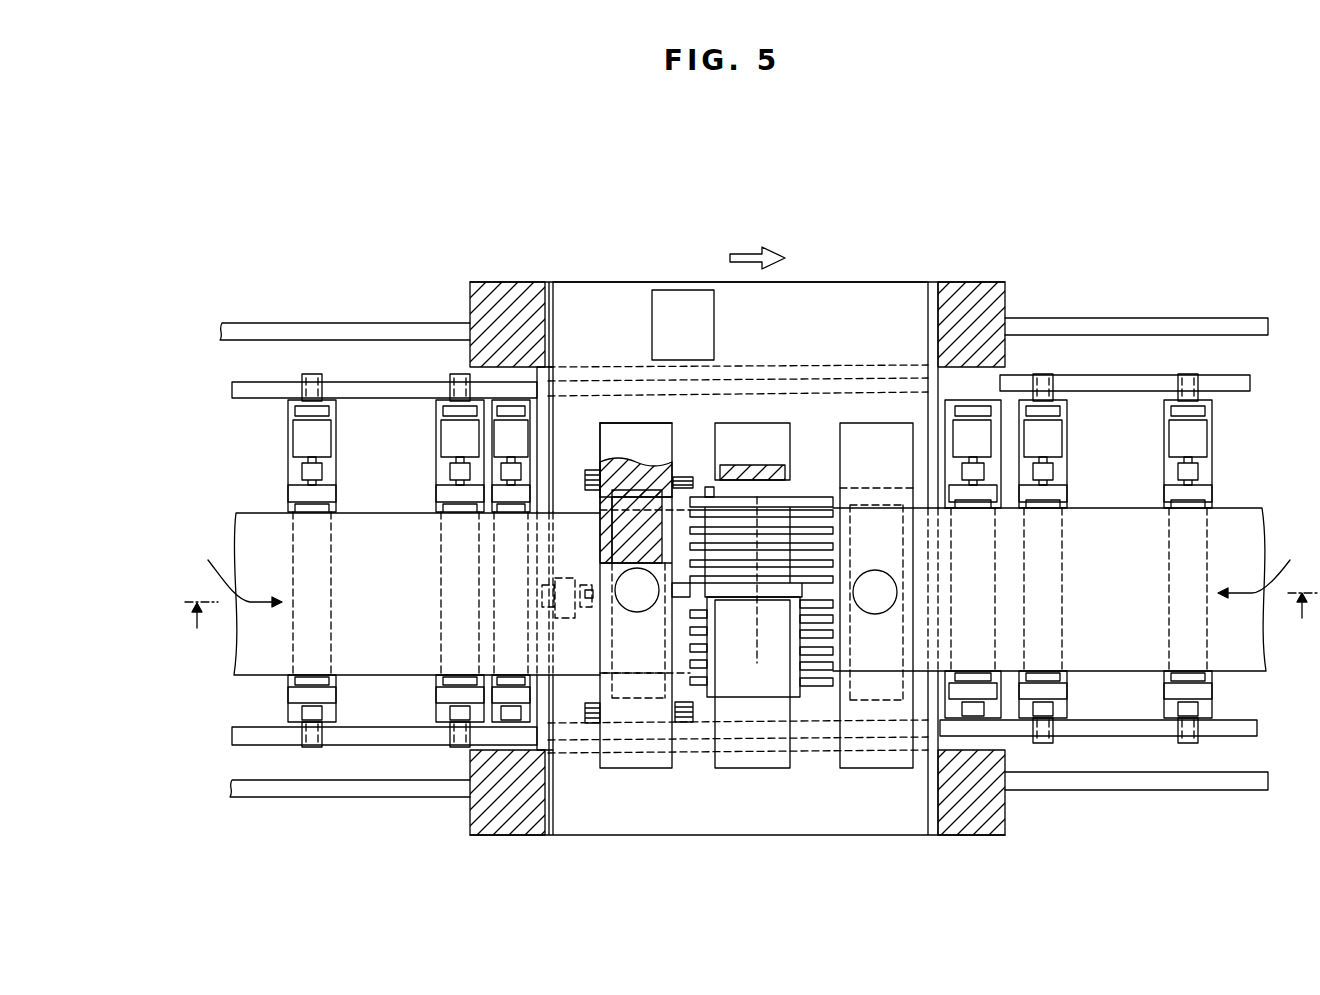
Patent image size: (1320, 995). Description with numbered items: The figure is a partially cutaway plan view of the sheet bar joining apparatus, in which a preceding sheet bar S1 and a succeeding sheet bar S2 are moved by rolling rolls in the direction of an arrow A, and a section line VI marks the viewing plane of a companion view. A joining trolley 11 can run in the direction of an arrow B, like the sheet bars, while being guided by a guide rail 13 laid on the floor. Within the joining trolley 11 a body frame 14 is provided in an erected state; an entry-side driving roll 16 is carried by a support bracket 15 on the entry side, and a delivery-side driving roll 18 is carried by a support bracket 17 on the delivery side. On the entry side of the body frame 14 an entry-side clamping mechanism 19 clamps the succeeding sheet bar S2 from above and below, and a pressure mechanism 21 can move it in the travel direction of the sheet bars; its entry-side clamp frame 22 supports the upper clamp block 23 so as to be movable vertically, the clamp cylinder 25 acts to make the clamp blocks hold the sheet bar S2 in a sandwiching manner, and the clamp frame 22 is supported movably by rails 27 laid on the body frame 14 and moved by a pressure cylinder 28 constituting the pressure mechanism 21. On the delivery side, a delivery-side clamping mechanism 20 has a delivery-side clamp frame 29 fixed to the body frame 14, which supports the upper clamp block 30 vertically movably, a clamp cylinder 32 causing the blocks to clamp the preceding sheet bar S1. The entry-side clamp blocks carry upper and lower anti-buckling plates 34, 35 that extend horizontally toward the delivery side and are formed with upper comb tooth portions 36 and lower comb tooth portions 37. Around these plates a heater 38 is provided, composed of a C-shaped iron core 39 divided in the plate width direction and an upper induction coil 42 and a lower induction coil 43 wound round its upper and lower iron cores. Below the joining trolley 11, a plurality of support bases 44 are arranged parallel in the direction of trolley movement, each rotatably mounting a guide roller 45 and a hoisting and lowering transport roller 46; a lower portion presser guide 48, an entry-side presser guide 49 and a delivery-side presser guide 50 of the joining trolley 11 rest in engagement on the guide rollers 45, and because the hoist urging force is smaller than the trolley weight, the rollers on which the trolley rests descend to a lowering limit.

The joining trolley 11 is at (908, 282).
The guide rail 13 is at (1235, 322).
The body frame 14 is at (497, 295).
The support bracket 15 is at (523, 407).
The entry-side driving roll 16 is at (510, 675).
The support bracket 17 is at (992, 398).
The delivery-side driving roll 18 is at (972, 512).
The entry-side clamping mechanism 19 is at (655, 440).
The delivery-side clamping mechanism 20 is at (890, 407).
The pressure mechanism 21 is at (556, 770).
The entry-side clamp frame 22 is at (676, 425).
The clamp block 23 is at (642, 412).
The clamp cylinder 25 is at (637, 612).
The rails 27 is at (592, 470).
The pressure cylinder 28 is at (567, 577).
The delivery-side clamp frame 29 is at (858, 430).
The clamp block 30 is at (840, 487).
The clamp cylinder 32 is at (875, 612).
The anti-buckling plate 34 is at (640, 548).
The anti-buckling plate 35 is at (668, 470).
The upper comb tooth portions 36 is at (795, 549).
The lower comb tooth portions 37 is at (772, 500).
The heater 38 is at (753, 413).
The C-shaped iron core 39 is at (770, 432).
The upper induction coil 42 is at (800, 700).
The lower induction coil 43 is at (706, 486).
The support base 44 is at (436, 448).
The guide roller 45 is at (322, 380).
The hoisting and lowering transport roller 46 is at (337, 505).
The lower portion presser guide 48 is at (592, 468).
The entry-side presser guide 49 is at (271, 384).
The delivery-side presser guide 50 is at (1123, 380).
The arrow A is at (746, 568).
The arrow B is at (757, 245).
The preceding sheet bar S1 is at (1140, 520).
The succeeding sheet bar S2 is at (253, 517).
The section VI is at (752, 629).